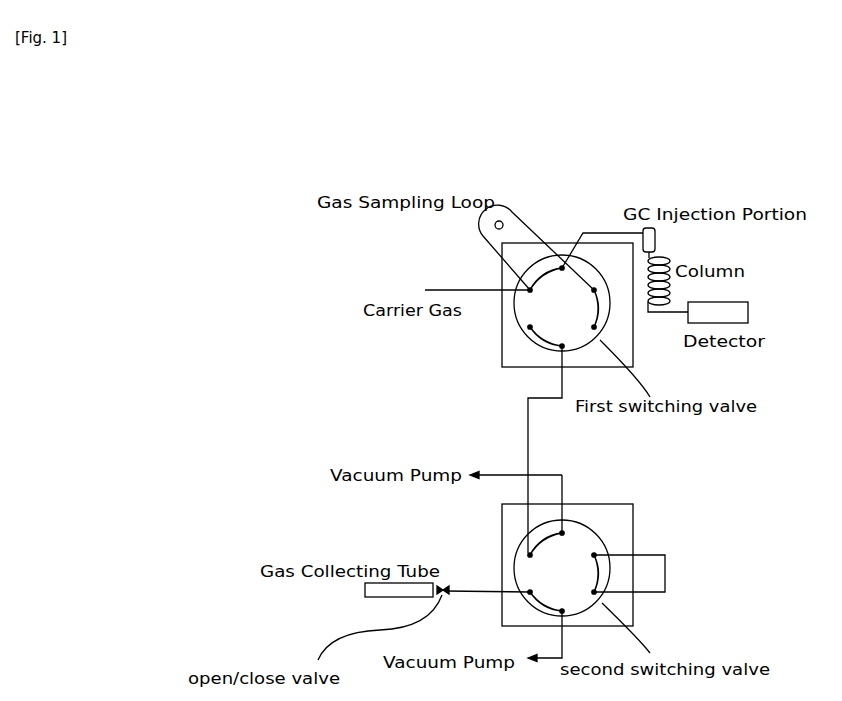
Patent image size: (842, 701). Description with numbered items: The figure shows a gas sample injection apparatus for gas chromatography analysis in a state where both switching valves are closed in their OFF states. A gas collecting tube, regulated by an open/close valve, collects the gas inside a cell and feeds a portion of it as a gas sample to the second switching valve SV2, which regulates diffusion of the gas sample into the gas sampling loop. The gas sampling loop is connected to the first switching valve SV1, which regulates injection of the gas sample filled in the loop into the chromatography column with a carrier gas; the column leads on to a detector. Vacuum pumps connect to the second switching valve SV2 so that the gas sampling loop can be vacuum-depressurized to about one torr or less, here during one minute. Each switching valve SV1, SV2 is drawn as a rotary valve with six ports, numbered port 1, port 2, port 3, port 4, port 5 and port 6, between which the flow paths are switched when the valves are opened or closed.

The first switching valve SV1 is at (567, 305).
The second switching valve SV2 is at (567, 565).
The valve port 1 is at (562, 473).
The valve port 2 is at (532, 427).
The valve port 3 is at (564, 407).
The valve port 4 is at (591, 427).
The valve port 5 is at (591, 456).
The valve port 6 is at (534, 456).